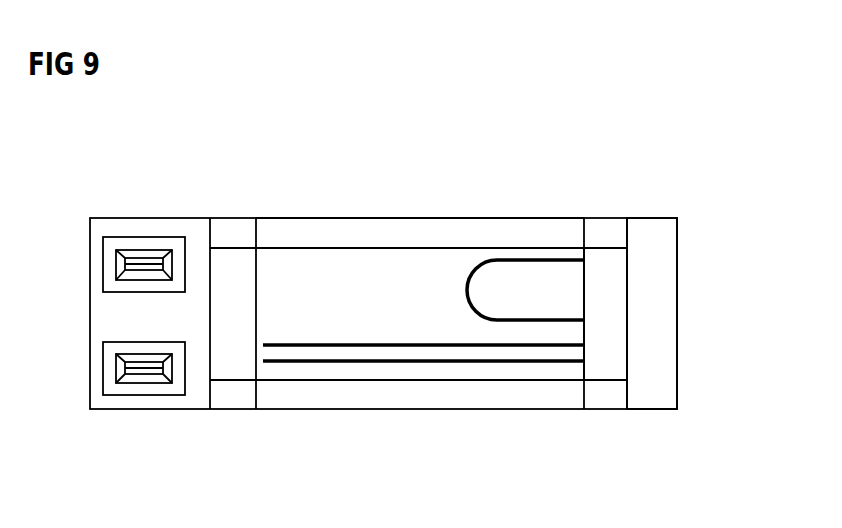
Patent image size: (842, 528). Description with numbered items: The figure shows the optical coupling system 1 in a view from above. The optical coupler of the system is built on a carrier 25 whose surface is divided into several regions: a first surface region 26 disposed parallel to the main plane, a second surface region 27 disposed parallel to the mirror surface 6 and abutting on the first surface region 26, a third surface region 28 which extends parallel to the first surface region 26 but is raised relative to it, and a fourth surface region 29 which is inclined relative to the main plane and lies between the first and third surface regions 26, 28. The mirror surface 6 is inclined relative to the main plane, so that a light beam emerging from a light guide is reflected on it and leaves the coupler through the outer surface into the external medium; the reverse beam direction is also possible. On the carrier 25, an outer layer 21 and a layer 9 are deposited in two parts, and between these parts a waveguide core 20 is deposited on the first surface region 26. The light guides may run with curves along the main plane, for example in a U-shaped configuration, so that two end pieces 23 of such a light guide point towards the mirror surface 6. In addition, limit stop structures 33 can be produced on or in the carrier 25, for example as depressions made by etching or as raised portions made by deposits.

The optical coupling system 1 is at (203, 124).
The mirror surface 6 is at (612, 335).
The layer 9 is at (618, 280).
The waveguide core 20 is at (463, 289).
The outer layer 21 is at (357, 248).
The end pieces 23 is at (567, 362).
The carrier 25 is at (520, 228).
The first surface region 26 is at (437, 230).
The second surface region 27 is at (600, 229).
The third surface region 28 is at (655, 229).
The fourth surface region 29 is at (233, 230).
The limit stop structures 33 is at (86, 276).